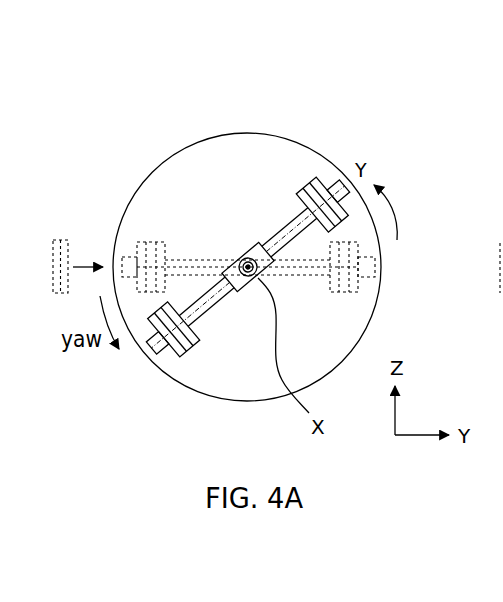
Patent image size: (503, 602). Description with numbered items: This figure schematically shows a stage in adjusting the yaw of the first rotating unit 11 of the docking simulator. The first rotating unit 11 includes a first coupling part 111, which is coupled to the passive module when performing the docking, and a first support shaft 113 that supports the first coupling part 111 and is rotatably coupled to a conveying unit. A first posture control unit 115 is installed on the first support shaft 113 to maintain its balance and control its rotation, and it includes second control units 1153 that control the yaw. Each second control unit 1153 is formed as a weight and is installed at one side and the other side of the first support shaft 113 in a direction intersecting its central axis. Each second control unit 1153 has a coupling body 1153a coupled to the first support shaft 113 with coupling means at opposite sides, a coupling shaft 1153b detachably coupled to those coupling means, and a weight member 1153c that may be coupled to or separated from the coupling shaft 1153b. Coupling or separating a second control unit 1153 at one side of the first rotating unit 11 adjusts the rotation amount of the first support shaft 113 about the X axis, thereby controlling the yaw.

The first rotating unit 11 is at (156, 124).
The first coupling part 111 is at (148, 195).
The first support shaft 113 is at (241, 257).
The first posture control unit 115 is at (275, 224).
The second control unit 1153 is at (432, 50).
The coupling body 1153a is at (252, 256).
The coupling shaft 1153b is at (264, 258).
The weight member 1153c is at (274, 262).